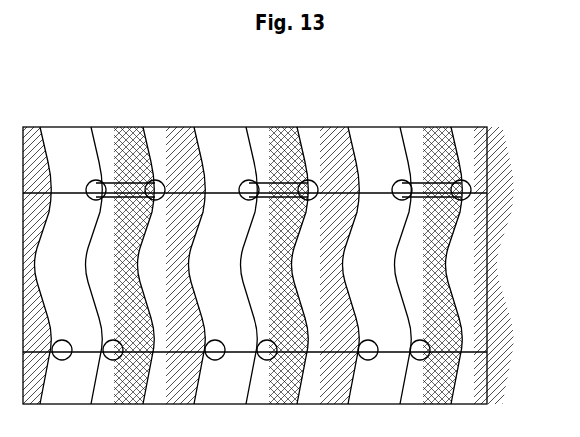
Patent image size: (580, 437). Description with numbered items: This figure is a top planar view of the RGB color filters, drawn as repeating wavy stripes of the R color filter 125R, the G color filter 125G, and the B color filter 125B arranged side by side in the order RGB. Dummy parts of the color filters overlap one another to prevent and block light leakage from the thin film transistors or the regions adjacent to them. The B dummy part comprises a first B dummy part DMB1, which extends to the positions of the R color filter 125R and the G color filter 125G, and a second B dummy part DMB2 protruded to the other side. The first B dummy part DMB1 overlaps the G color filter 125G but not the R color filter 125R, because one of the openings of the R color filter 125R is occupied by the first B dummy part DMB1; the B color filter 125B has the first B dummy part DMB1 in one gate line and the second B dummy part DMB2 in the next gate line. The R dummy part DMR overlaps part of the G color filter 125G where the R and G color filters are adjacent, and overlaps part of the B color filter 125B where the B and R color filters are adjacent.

The R color filter 125R is at (63, 132).
The G color filter 125G is at (115, 133).
The B color filter 125B is at (167, 133).
The 1B dummy part DMB1 is at (249, 182).
The 2B dummy part DMB2 is at (417, 311).
The R dummy part DMR is at (463, 328).